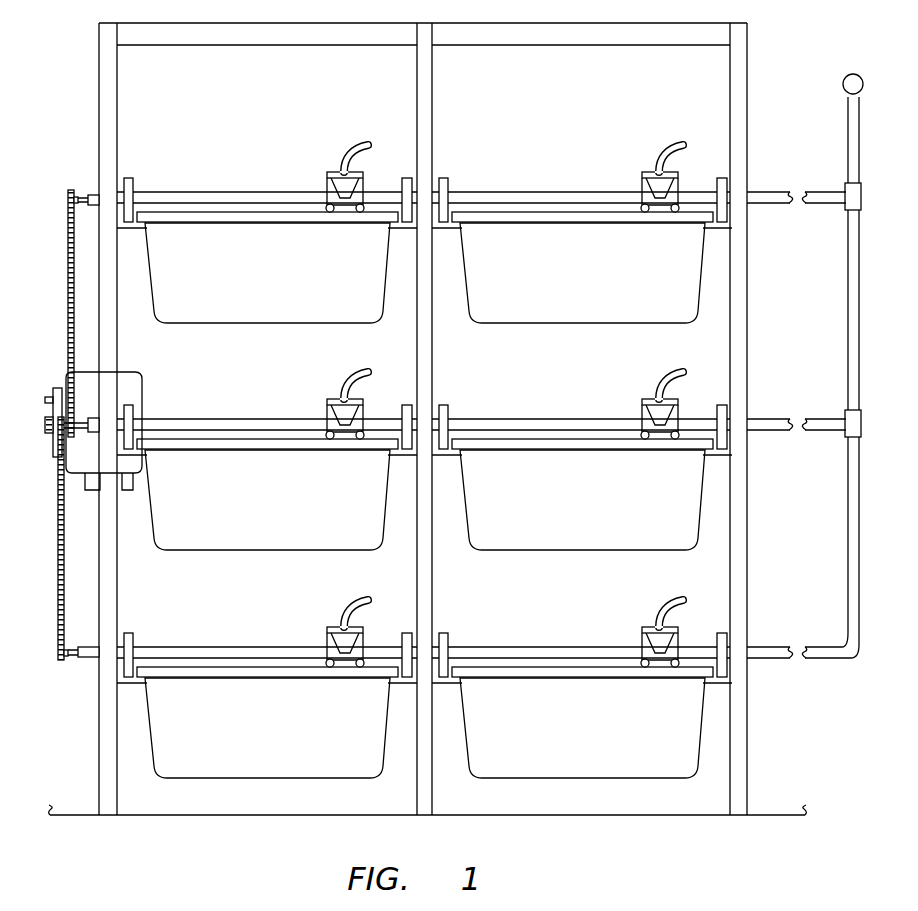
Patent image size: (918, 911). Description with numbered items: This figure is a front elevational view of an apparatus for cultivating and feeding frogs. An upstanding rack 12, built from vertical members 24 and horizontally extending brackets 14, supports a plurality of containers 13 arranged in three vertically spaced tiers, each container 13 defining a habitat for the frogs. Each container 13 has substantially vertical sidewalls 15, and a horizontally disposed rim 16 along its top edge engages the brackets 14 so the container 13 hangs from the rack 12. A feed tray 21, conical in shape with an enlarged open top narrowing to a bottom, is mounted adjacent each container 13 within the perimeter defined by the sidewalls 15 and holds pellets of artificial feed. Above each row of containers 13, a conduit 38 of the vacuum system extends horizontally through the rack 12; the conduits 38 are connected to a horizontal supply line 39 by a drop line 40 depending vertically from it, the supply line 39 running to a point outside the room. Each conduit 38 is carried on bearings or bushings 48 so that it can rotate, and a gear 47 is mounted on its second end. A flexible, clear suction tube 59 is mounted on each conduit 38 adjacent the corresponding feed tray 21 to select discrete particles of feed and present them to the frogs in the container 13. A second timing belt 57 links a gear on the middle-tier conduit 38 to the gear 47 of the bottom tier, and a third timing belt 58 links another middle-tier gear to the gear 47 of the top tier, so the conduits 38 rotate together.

The upstanding rack 12 is at (771, 76).
The container 13 is at (585, 322).
The bracket 14 is at (718, 453).
The sidewall 15 is at (591, 269).
The rim 16 is at (267, 223).
The feed tray 21 is at (338, 176).
The vertical member 24 is at (99, 82).
The conduit 38 is at (495, 192).
The supply line 39 is at (845, 90).
The drop line 40 is at (848, 270).
The gear 47 is at (80, 197).
The bearing or bushing 48 is at (129, 180).
The second timing belt 57 is at (60, 585).
The third timing belt 58 is at (68, 296).
The suction tube 59 is at (668, 148).